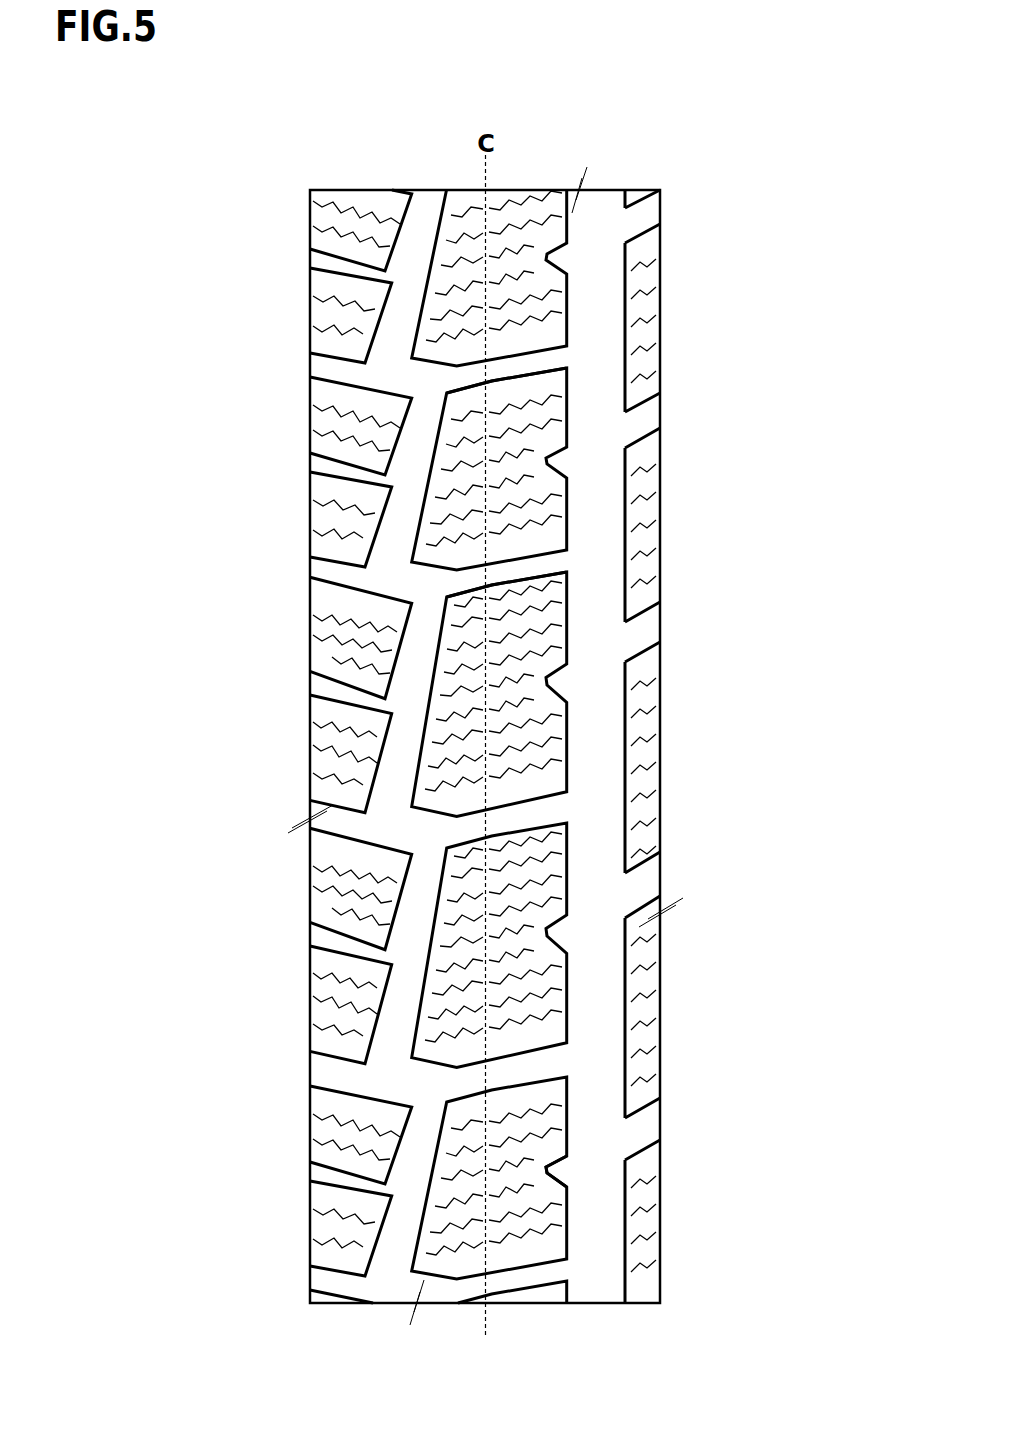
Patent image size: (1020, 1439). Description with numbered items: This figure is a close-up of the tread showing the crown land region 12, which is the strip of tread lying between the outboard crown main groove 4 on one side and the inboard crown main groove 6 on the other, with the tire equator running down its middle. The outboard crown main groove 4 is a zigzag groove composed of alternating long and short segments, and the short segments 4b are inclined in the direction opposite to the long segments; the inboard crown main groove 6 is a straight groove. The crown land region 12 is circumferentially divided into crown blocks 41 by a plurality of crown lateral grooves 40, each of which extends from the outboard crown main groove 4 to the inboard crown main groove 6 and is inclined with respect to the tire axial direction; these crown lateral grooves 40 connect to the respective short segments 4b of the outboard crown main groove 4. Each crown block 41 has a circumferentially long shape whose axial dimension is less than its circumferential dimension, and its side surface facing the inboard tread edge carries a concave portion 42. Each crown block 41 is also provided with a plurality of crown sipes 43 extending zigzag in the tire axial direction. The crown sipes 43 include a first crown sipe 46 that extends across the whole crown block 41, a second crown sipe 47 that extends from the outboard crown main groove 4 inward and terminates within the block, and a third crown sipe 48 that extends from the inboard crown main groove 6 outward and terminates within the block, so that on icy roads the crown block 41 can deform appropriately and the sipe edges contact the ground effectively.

The outboard crown main groove 4 is at (426, 232).
The short segments 4b is at (394, 374).
The inboard crown main groove 6 is at (602, 236).
The crown land region 12 is at (521, 235).
The crown lateral grooves 40 is at (534, 368).
The crown blocks 41 is at (506, 454).
The concave portion 42 is at (571, 1171).
The crown sipes 43 is at (621, 776).
The first crown sipe 46 is at (497, 760).
The second crown sipe 47 is at (500, 720).
The third crown sipe 48 is at (490, 680).